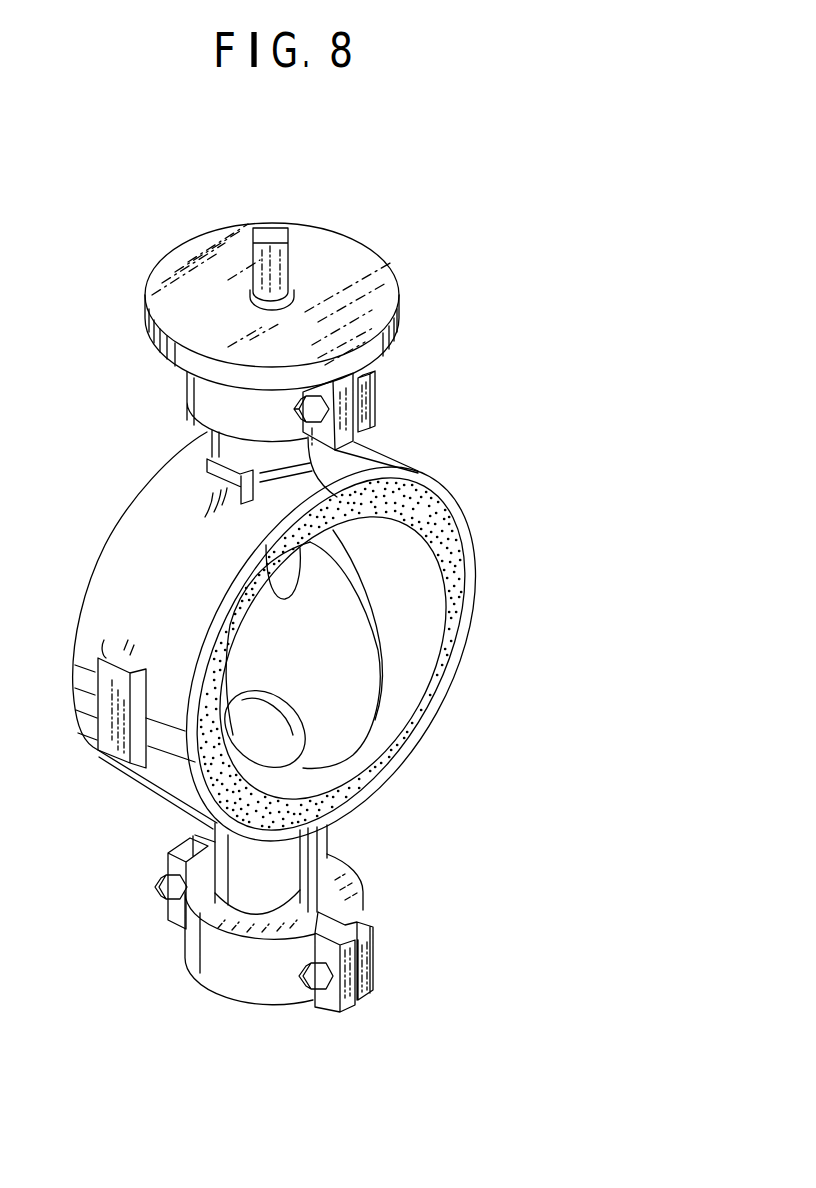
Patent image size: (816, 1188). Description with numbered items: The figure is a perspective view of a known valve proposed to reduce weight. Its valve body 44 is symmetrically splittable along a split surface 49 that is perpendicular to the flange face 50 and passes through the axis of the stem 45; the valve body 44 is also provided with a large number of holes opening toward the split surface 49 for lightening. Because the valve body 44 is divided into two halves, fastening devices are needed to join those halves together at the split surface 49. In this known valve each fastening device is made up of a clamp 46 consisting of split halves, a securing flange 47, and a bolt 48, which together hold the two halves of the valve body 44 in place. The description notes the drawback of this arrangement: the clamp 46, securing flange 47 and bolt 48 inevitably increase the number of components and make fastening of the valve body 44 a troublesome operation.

The valve body 44 is at (157, 520).
The stem 45 is at (256, 269).
The clamp 46 is at (357, 882).
The securing flange 47 is at (367, 288).
The bolt 48 is at (316, 985).
The split surface 49 is at (370, 468).
The flange face 50 is at (455, 507).